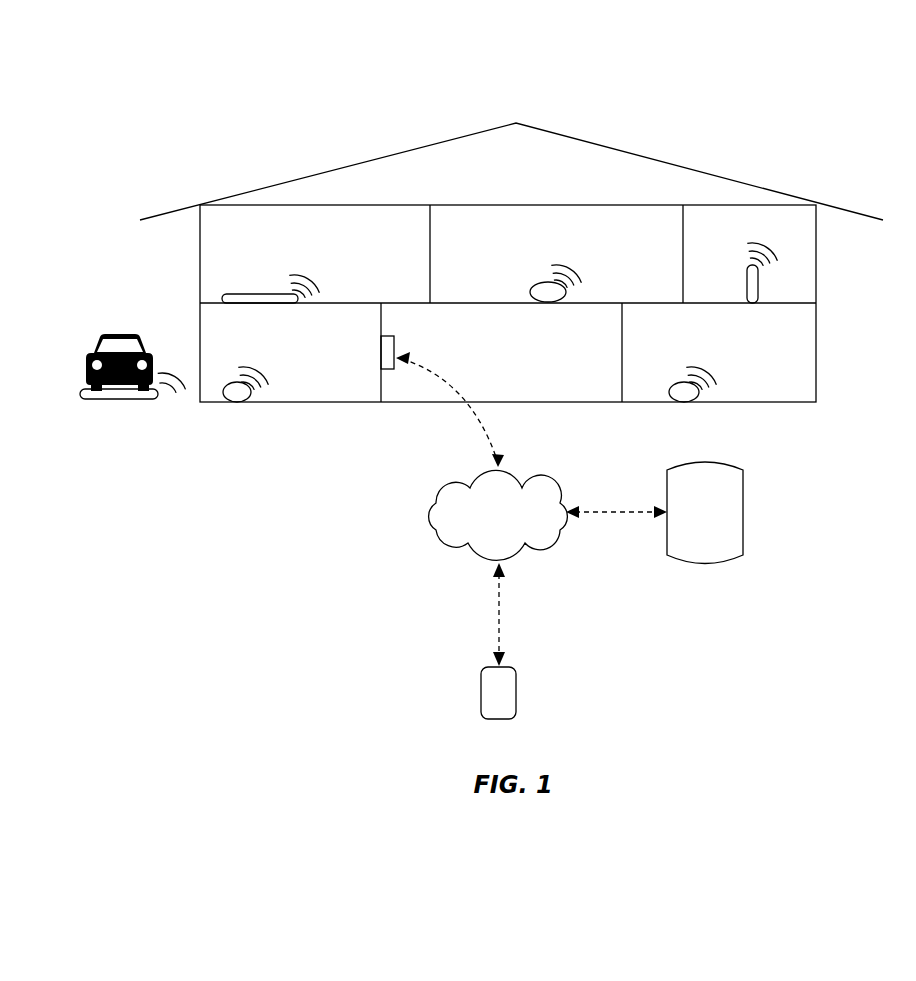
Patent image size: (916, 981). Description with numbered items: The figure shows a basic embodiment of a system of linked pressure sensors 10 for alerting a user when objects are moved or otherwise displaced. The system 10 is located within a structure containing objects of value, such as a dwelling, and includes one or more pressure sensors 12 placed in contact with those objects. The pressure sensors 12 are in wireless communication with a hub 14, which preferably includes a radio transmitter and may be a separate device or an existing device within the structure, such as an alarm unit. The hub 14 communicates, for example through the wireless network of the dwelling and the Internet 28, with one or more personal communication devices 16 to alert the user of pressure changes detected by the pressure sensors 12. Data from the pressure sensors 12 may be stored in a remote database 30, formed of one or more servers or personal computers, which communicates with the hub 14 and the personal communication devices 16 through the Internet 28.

The system of linked pressure sensors 10 is at (706, 118).
The pressure sensors 12 is at (243, 296).
The hub 14 is at (395, 341).
The personal communication devices 16 is at (518, 689).
The Internet 28 is at (427, 508).
The remote database 30 is at (694, 521).